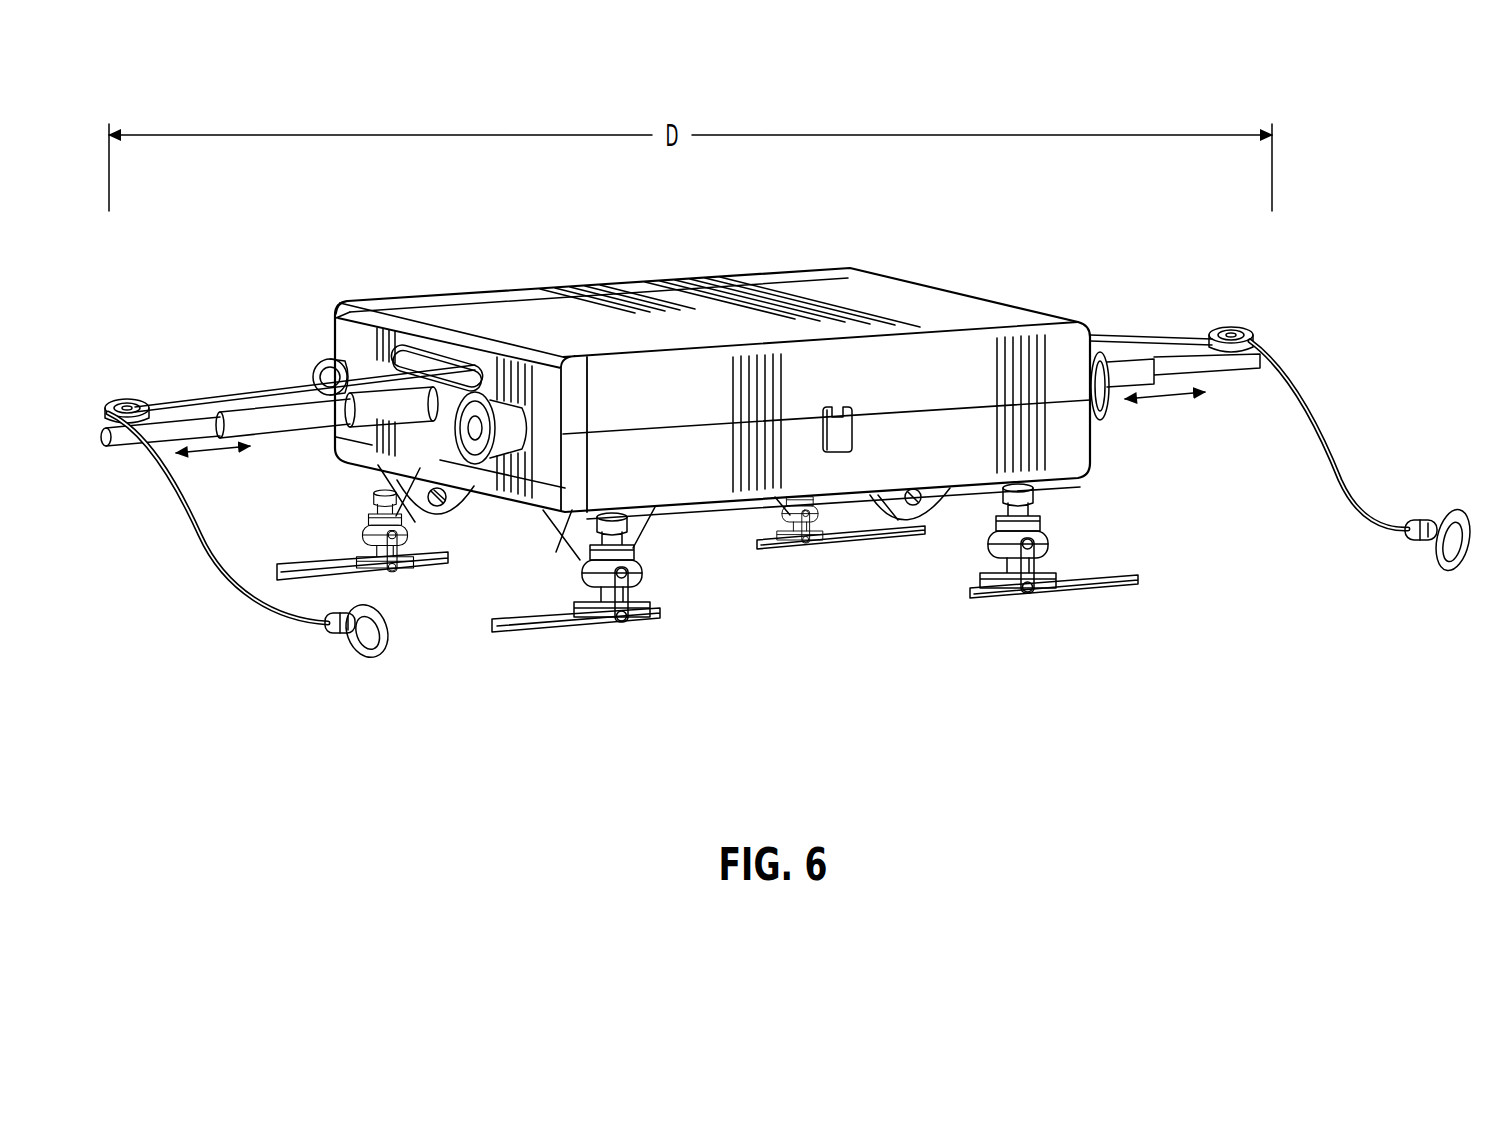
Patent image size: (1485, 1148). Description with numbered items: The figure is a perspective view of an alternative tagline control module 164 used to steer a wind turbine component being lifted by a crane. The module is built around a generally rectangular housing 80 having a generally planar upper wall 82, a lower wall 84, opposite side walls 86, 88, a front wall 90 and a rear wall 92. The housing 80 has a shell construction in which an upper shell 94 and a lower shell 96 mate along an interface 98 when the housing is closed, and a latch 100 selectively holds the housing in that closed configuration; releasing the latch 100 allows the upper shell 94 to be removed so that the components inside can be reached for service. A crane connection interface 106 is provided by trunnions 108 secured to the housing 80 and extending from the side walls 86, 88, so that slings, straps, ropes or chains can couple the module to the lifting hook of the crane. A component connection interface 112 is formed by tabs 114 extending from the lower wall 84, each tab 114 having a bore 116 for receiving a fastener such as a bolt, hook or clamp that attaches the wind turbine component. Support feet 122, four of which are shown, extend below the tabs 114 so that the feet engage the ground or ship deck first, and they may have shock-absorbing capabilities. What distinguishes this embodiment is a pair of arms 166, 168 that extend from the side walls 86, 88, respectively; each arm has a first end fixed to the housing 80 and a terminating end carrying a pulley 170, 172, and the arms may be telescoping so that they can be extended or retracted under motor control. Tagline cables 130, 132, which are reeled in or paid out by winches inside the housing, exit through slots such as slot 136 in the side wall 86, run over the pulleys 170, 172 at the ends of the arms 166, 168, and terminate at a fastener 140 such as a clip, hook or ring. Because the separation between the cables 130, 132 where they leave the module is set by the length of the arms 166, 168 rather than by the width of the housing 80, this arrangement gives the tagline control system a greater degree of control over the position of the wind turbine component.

The housing 80 is at (712, 370).
The upper wall 82 is at (730, 277).
The lower wall 84 is at (833, 522).
The side wall 86 is at (414, 413).
The side wall 88 is at (1119, 418).
The front wall 90 is at (826, 427).
The rear wall 92 is at (599, 258).
The upper shell 94 is at (425, 286).
The lower shell 96 is at (442, 470).
The interface 98 is at (889, 413).
The latch 100 is at (839, 406).
The crane connection interface 106 is at (310, 348).
The trunnion 108 is at (739, 401).
The component connection interface 112 is at (707, 553).
The tab 114 is at (639, 541).
The bore 116 is at (673, 554).
The support foot 122 is at (707, 595).
The tagline cable 130 is at (218, 540).
The tagline cable 132 is at (1329, 457).
The slot 136 is at (437, 326).
The fastener 140 is at (900, 606).
The tagline control module 164 is at (673, 289).
The arm 166 is at (269, 442).
The arm 168 is at (1185, 392).
The pulley 170 is at (127, 387).
The pulley 172 is at (1231, 314).